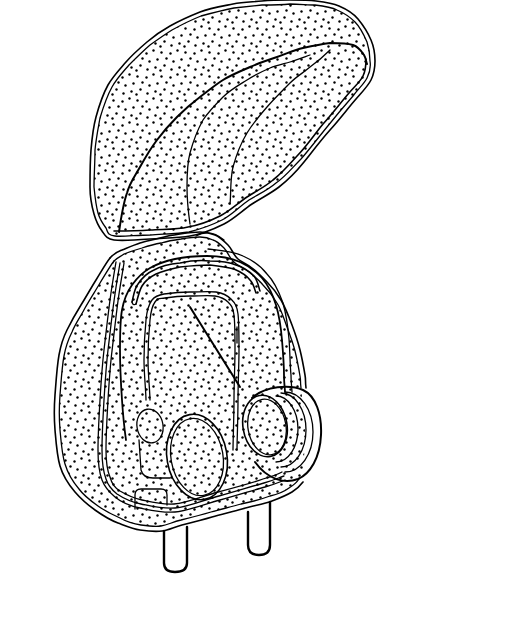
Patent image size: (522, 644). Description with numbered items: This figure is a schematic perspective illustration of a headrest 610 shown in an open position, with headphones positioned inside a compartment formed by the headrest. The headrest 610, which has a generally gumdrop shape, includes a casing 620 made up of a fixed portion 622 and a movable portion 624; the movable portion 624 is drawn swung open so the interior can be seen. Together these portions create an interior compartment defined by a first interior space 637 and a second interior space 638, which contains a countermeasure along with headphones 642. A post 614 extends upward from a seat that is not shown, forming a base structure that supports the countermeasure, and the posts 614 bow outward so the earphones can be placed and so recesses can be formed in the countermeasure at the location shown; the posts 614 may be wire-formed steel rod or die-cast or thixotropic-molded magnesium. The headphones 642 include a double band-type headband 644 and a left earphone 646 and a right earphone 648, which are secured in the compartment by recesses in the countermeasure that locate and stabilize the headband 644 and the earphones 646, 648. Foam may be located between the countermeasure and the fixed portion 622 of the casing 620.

The headrest 610 is at (281, 234).
The post 614 is at (250, 285).
The casing 620 is at (108, 231).
The fixed portion 622 is at (72, 320).
The movable portion 624 is at (138, 48).
The first interior space 637 is at (208, 391).
The second interior space 638 is at (307, 83).
The headphones 642 is at (265, 317).
The headband 644 is at (263, 271).
The left earphone 646 is at (170, 524).
The right earphone 648 is at (304, 474).